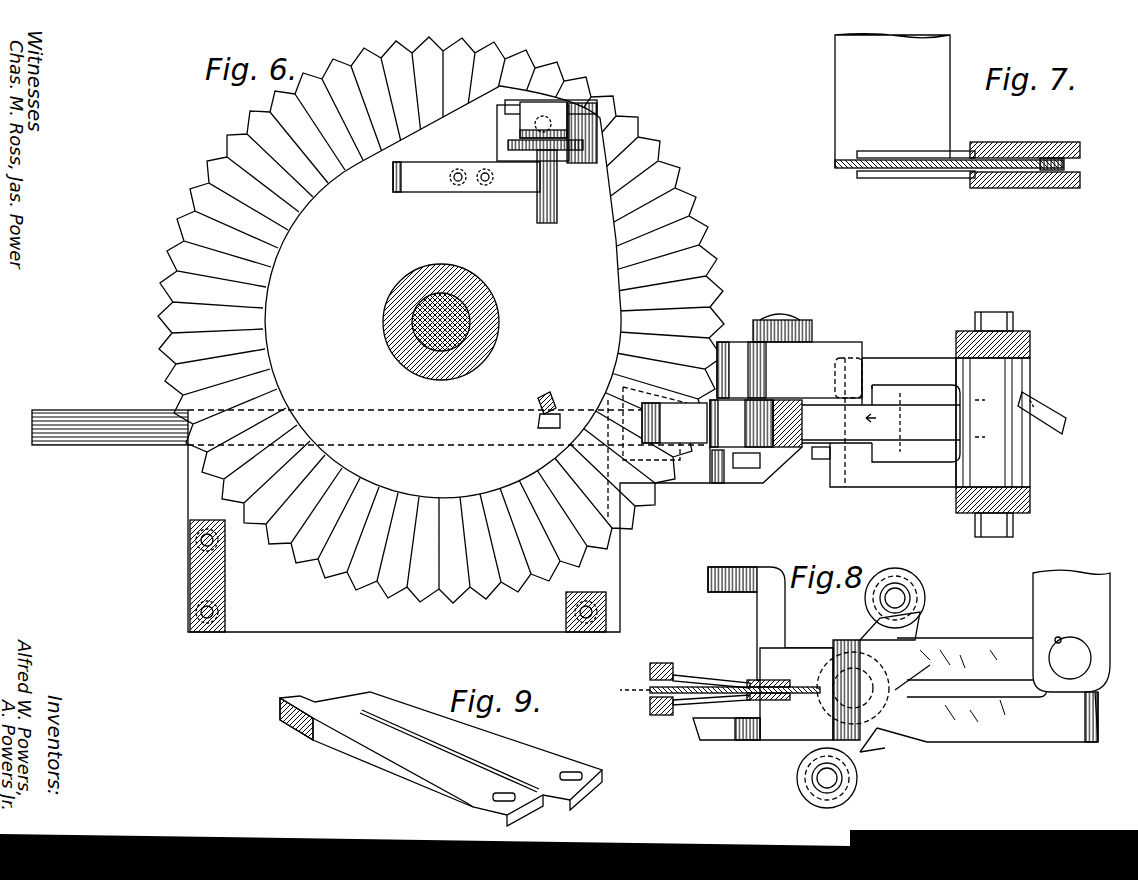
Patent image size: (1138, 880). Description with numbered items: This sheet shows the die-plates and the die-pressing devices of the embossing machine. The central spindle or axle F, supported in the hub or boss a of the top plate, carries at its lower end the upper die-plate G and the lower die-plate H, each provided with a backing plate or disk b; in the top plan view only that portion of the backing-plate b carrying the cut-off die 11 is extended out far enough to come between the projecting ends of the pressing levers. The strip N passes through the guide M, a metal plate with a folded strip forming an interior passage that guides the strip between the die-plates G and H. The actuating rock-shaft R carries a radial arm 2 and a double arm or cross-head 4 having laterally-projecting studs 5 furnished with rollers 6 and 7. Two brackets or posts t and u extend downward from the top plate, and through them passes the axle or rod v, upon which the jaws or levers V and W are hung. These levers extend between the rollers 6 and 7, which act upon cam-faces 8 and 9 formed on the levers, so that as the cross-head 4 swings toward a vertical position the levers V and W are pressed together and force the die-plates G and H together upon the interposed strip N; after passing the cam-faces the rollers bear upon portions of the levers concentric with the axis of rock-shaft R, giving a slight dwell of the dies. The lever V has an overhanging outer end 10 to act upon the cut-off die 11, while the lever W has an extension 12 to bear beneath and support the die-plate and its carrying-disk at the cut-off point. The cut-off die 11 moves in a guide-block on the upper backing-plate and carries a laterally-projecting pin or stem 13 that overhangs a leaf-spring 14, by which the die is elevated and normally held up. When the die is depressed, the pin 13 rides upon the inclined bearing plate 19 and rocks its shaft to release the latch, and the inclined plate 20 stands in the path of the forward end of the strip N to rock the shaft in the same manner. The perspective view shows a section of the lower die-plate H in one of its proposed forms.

In FIG. 6, the hub or boss a is at (441, 320).
In FIG. 6, the backing plate or disk b is at (443, 292).
In FIG. 7, the backing plate or disk b is at (1025, 205).
In FIG. 8, the backing plate or disk b is at (662, 690).
In FIG. 6, the central spindle or axle F is at (492, 298).
In FIG. 6, the strip N is at (120, 410).
In FIG. 7, the strip N is at (1050, 168).
In FIG. 8, the strip N is at (711, 687).
In FIG. 6, the guide M is at (262, 592).
In FIG. 7, the guide M is at (1063, 163).
In FIG. 6, the inclined bearing plate 19 is at (538, 420).
In FIG. 6, the extension of lever W 12 is at (655, 378).
In FIG. 8, the extension of lever W 12 is at (730, 735).
In FIG. 6, the overhanging outer end of lever V 10 is at (674, 423).
In FIG. 8, the overhanging outer end of lever V 10 is at (770, 623).
In FIG. 6, the roller 6 is at (756, 441).
In FIG. 8, the roller 6 is at (915, 592).
In FIG. 6, the double arm or cross-head 4 is at (789, 370).
In FIG. 8, the double arm or cross-head 4 is at (880, 640).
In FIG. 6, the actuating rock-shaft R is at (812, 322).
In FIG. 6, the laterally-projecting stud 5 is at (812, 482).
In FIG. 6, the roller 7 is at (881, 422).
In FIG. 8, the roller 7 is at (855, 785).
In FIG. 6, the jaw or lever V is at (881, 422).
In FIG. 8, the jaw or lever V is at (979, 680).
In FIG. 6, the jaw or lever W is at (884, 422).
In FIG. 8, the jaw or lever W is at (969, 688).
In FIG. 6, the bracket or post u is at (1030, 337).
In FIG. 6, the bracket or post t is at (1030, 500).
In FIG. 8, the bracket or post t is at (1071, 656).
In FIG. 6, the axle or rod v is at (994, 312).
In FIG. 8, the axle or rod v is at (1070, 658).
In FIG. 6, the inclined bearing plate 20 is at (1056, 432).
In FIG. 6, the cut-off die 11 is at (545, 120).
In FIG. 6, the laterally-projecting pin or stem 13 is at (557, 220).
In FIG. 6, the leaf-spring 14 is at (466, 177).
In FIG. 7, the upper die-plate G is at (917, 157).
In FIG. 8, the upper die-plate G is at (720, 680).
In FIG. 7, the lower die-plate H is at (908, 172).
In FIG. 8, the lower die-plate H is at (712, 700).
In FIG. 9, the lower die-plate H is at (441, 759).
In FIG. 8, the cam-face 8 is at (865, 648).
In FIG. 8, the radial arm 2 is at (916, 670).
In FIG. 8, the cam-face 9 is at (872, 740).